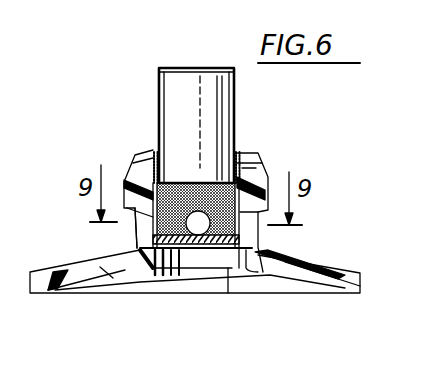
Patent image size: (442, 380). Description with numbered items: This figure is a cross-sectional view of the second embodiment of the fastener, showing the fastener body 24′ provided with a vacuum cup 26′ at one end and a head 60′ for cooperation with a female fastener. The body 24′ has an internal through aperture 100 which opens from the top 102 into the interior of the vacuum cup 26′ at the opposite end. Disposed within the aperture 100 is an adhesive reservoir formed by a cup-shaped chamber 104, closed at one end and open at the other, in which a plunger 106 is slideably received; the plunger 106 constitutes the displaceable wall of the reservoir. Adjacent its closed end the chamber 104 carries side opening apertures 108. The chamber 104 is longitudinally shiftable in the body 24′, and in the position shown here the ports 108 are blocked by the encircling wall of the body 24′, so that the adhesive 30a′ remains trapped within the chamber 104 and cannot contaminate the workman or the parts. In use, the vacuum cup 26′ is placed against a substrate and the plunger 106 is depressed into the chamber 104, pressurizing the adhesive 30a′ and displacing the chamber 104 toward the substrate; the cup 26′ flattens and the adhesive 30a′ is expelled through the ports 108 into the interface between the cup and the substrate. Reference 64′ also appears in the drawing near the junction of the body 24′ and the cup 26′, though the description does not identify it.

The internal through aperture 100 is at (132, 173).
The top 102 is at (148, 152).
The cup-shaped chamber 104 is at (155, 272).
The plunger 106 is at (223, 108).
The side opening apertures 108 is at (192, 270).
The fastener body 24′ is at (260, 164).
The vacuum cup 26′ is at (308, 268).
The adhesive 30a′ is at (228, 268).
The head 60′ is at (258, 172).
The neck fillet 64′ is at (133, 223).